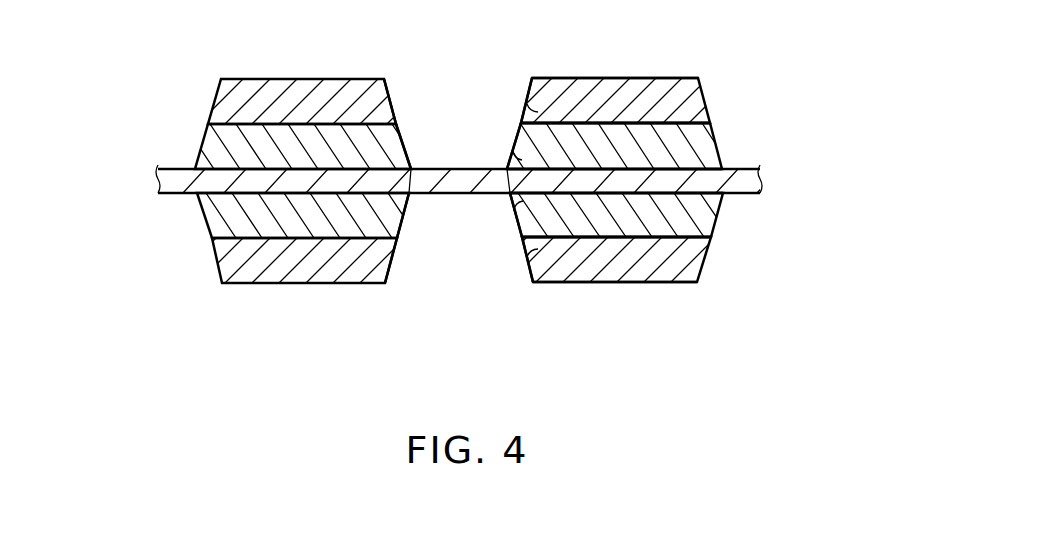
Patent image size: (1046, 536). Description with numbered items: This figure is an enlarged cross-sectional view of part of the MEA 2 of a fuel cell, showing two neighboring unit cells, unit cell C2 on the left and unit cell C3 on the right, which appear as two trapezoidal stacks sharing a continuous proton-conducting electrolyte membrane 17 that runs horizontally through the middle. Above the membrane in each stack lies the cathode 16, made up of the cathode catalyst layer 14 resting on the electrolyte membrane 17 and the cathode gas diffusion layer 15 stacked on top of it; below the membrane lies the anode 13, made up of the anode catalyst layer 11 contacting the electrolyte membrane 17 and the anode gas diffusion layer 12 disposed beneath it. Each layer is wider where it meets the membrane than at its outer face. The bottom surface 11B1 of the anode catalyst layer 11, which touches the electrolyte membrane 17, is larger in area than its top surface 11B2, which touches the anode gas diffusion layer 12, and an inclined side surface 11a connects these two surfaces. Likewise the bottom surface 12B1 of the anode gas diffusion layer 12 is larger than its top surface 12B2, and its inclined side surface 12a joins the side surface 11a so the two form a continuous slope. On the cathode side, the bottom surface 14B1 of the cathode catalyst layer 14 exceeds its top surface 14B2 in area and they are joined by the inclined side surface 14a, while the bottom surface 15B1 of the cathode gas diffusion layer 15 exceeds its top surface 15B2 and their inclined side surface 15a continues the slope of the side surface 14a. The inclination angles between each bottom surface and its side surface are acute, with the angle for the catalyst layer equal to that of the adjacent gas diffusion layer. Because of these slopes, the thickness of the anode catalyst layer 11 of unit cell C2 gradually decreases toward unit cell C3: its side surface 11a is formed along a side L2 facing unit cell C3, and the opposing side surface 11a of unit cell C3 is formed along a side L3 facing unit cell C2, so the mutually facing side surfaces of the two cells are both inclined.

The MEA 2 is at (95, 93).
The cathode 16 is at (145, 82).
The anode 13 is at (145, 205).
The cathode gas diffusion layer 15 is at (222, 103).
The cathode catalyst layer 14 is at (205, 147).
The electrolyte membrane 17 is at (158, 177).
The anode catalyst layer 11 is at (207, 217).
The anode gas diffusion layer 12 is at (223, 260).
The side surface of cathode gas diffusion layer 15a is at (389, 93).
The side surface of cathode catalyst layer 14a is at (401, 139).
The side surface of anode catalyst layer 11a is at (402, 224).
The side surface of anode gas diffusion layer 12a is at (389, 270).
The side of unit cell C2 L2 is at (412, 168).
The side of unit cell C3 L3 is at (507, 168).
The bottom surface of cathode gas diffusion layer 15B1 is at (657, 137).
The top surface of cathode gas diffusion layer 15B2 is at (663, 78).
The bottom surface of cathode catalyst layer 14B1 is at (720, 167).
The top surface of cathode catalyst layer 14B2 is at (685, 113).
The bottom surface of anode catalyst layer 11B1 is at (717, 193).
The top surface of anode catalyst layer 11B2 is at (693, 248).
The bottom surface of anode gas diffusion layer 12B1 is at (657, 225).
The top surface of anode gas diffusion layer 12B2 is at (667, 283).
The unit cell C2 is at (303, 300).
The unit cell C3 is at (605, 346).